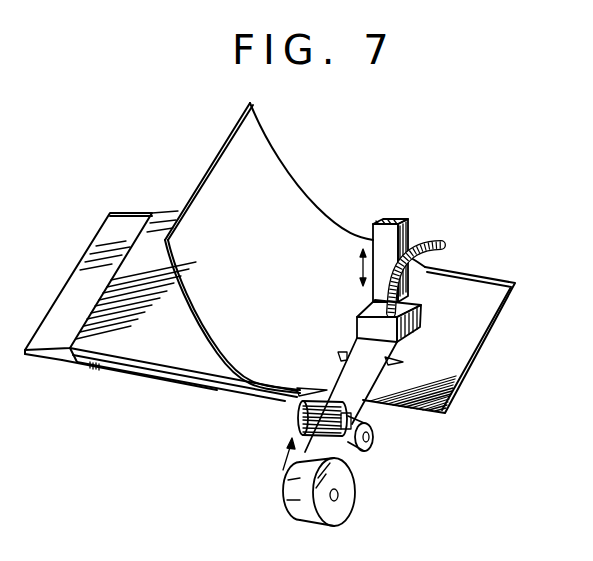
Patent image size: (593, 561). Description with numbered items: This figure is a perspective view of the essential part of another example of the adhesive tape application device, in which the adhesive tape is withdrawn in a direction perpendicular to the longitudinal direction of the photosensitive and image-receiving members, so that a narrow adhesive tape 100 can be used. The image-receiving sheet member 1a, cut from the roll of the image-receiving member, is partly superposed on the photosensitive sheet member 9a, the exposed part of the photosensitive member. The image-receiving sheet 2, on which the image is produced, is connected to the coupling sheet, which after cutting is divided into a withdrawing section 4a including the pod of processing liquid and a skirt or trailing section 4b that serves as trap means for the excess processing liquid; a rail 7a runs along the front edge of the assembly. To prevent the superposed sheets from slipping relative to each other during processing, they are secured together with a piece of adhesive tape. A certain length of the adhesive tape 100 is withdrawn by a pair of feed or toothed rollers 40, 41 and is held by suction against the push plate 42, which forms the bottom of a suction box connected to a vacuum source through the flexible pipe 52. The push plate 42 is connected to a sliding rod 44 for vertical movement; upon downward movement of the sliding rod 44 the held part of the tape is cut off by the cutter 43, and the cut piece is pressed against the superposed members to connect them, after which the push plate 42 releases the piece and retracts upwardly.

The image-receiving sheet member 1a is at (481, 268).
The image-receiving sheet 2 is at (186, 335).
The withdrawing section 4a is at (478, 325).
The skirt or trailing section 4b is at (118, 233).
The guide rail 7a is at (147, 363).
The photosensitive sheet member 9a is at (273, 173).
The feed roller 40 is at (298, 417).
The feed roller 41 is at (372, 440).
The push plate 42 is at (365, 302).
The cutter 43 is at (343, 355).
The sliding rod 44 is at (387, 243).
The flexible pipe 52 is at (438, 242).
The narrow adhesive tape 100 is at (345, 487).